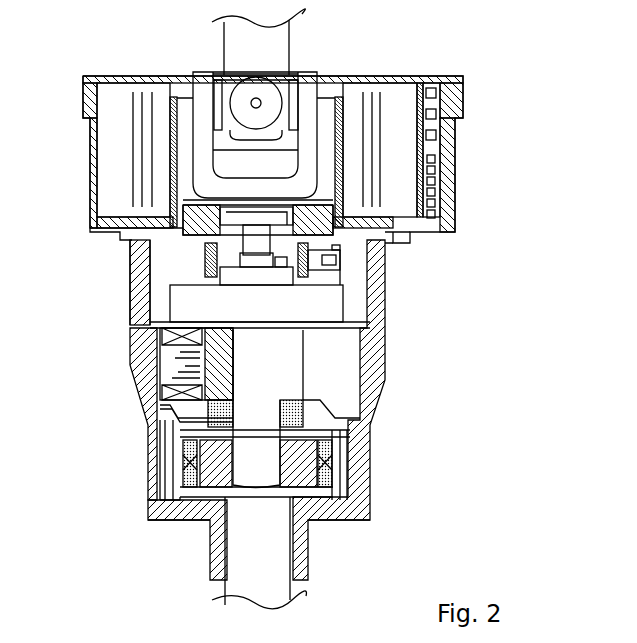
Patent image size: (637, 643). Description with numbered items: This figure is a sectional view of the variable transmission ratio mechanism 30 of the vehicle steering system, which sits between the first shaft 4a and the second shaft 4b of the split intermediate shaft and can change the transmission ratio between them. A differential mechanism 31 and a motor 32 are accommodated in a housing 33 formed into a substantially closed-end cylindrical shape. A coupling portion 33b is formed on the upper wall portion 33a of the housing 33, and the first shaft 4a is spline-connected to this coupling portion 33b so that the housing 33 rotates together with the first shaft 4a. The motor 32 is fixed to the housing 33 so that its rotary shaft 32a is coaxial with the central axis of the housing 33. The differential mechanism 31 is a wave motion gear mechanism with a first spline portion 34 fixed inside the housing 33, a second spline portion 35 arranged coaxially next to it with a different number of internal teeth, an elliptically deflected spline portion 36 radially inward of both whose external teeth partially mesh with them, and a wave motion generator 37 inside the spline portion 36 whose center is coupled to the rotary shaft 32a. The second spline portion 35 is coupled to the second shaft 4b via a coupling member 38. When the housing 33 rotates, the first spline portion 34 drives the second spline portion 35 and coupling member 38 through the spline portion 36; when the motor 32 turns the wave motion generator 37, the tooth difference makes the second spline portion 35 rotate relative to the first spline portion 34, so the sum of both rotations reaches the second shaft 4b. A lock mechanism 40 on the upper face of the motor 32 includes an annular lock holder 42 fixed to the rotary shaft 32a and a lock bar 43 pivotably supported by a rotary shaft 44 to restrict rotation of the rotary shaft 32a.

The variable transmission ratio mechanism 30 is at (249, 130).
The first shaft 4a is at (293, 43).
The second shaft 4b is at (293, 590).
The coupling portion 33b is at (184, 148).
The upper wall portion 33a is at (140, 243).
The housing 33 is at (249, 406).
The lock mechanism 40 is at (253, 273).
The lock holder 42 is at (219, 280).
The lock bar 43 is at (340, 260).
The rotary shaft 44 is at (328, 276).
The differential mechanism 31 is at (162, 425).
The motor 32 is at (328, 409).
The rotary shaft 32a is at (255, 415).
The first spline portion 34 is at (348, 438).
The second spline portion 35 is at (340, 487).
The spline portion 36 is at (353, 518).
The wave motion generator 37 is at (320, 518).
The coupling member 38 is at (367, 508).